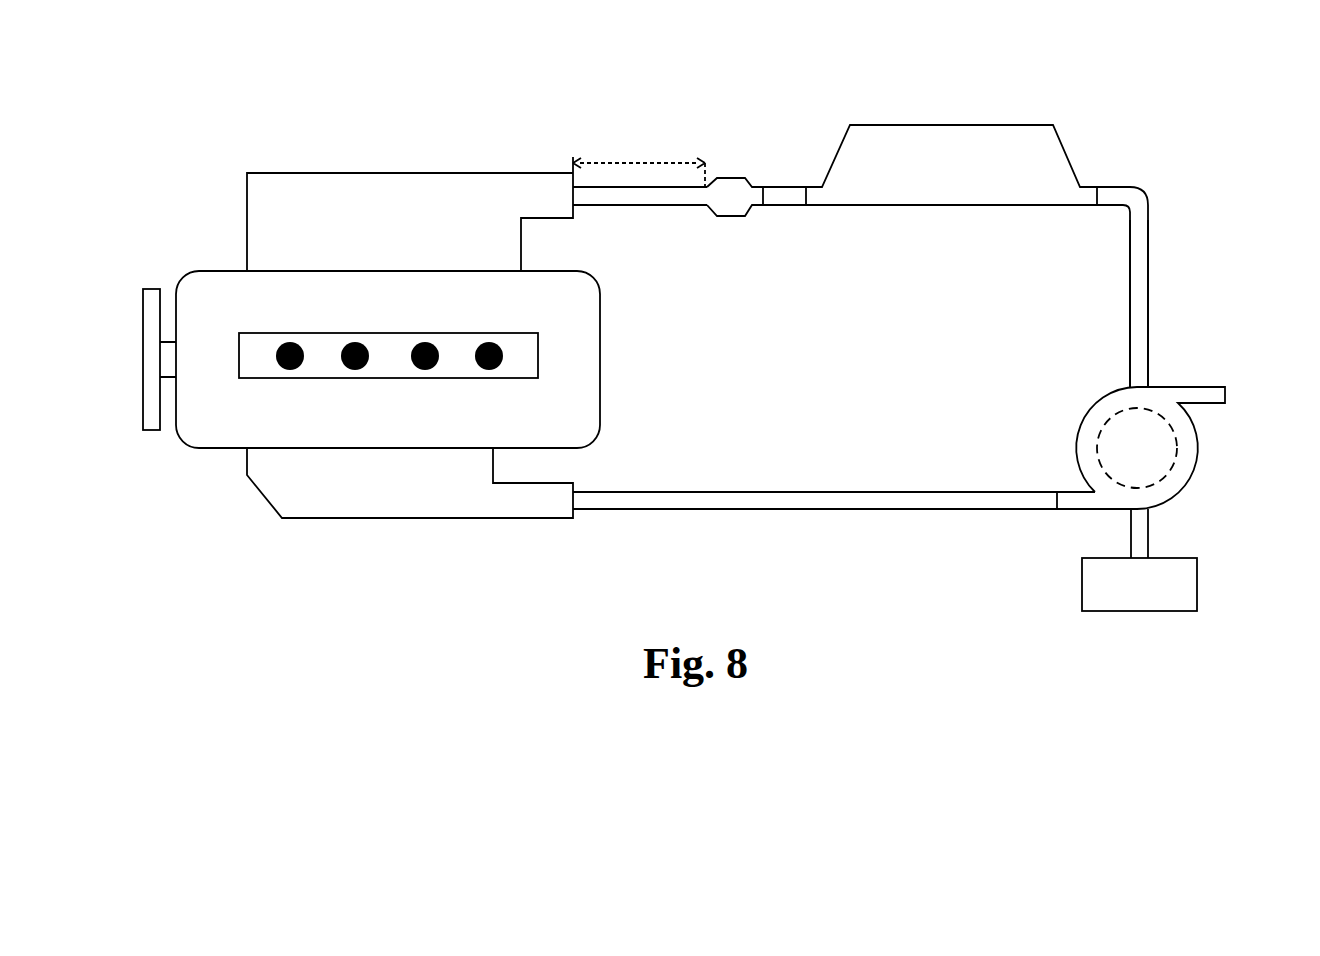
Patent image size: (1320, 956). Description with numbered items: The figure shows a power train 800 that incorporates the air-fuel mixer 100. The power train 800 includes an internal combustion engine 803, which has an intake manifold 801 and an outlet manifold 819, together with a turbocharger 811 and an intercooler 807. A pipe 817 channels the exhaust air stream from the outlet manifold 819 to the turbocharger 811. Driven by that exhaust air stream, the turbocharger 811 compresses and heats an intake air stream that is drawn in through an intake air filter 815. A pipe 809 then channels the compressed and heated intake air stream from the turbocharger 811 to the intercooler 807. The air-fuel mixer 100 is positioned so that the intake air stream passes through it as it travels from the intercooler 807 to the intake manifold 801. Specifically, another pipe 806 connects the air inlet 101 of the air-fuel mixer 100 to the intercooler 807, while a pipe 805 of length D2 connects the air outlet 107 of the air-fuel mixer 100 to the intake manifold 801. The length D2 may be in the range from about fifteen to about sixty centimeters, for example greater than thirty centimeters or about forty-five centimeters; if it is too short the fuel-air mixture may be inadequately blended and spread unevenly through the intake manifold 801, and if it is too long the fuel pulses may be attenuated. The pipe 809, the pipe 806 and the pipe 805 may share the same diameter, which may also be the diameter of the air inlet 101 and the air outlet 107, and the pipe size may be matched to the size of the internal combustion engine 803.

The power train 800 is at (275, 92).
The intake manifold 801 is at (333, 184).
The internal combustion engine 803 is at (580, 350).
The pipe 805 is at (619, 197).
The pipe 806 is at (794, 192).
The intercooler 807 is at (953, 145).
The pipe 809 is at (1138, 284).
The turbocharger 811 is at (1160, 395).
The intake air filter 815 is at (1177, 584).
The pipe 817 is at (795, 502).
The outlet manifold 819 is at (418, 505).
The air-fuel mixer 100 is at (732, 194).
The air inlet 101 is at (775, 196).
The air outlet 107 is at (696, 196).
The length D2 is at (636, 163).